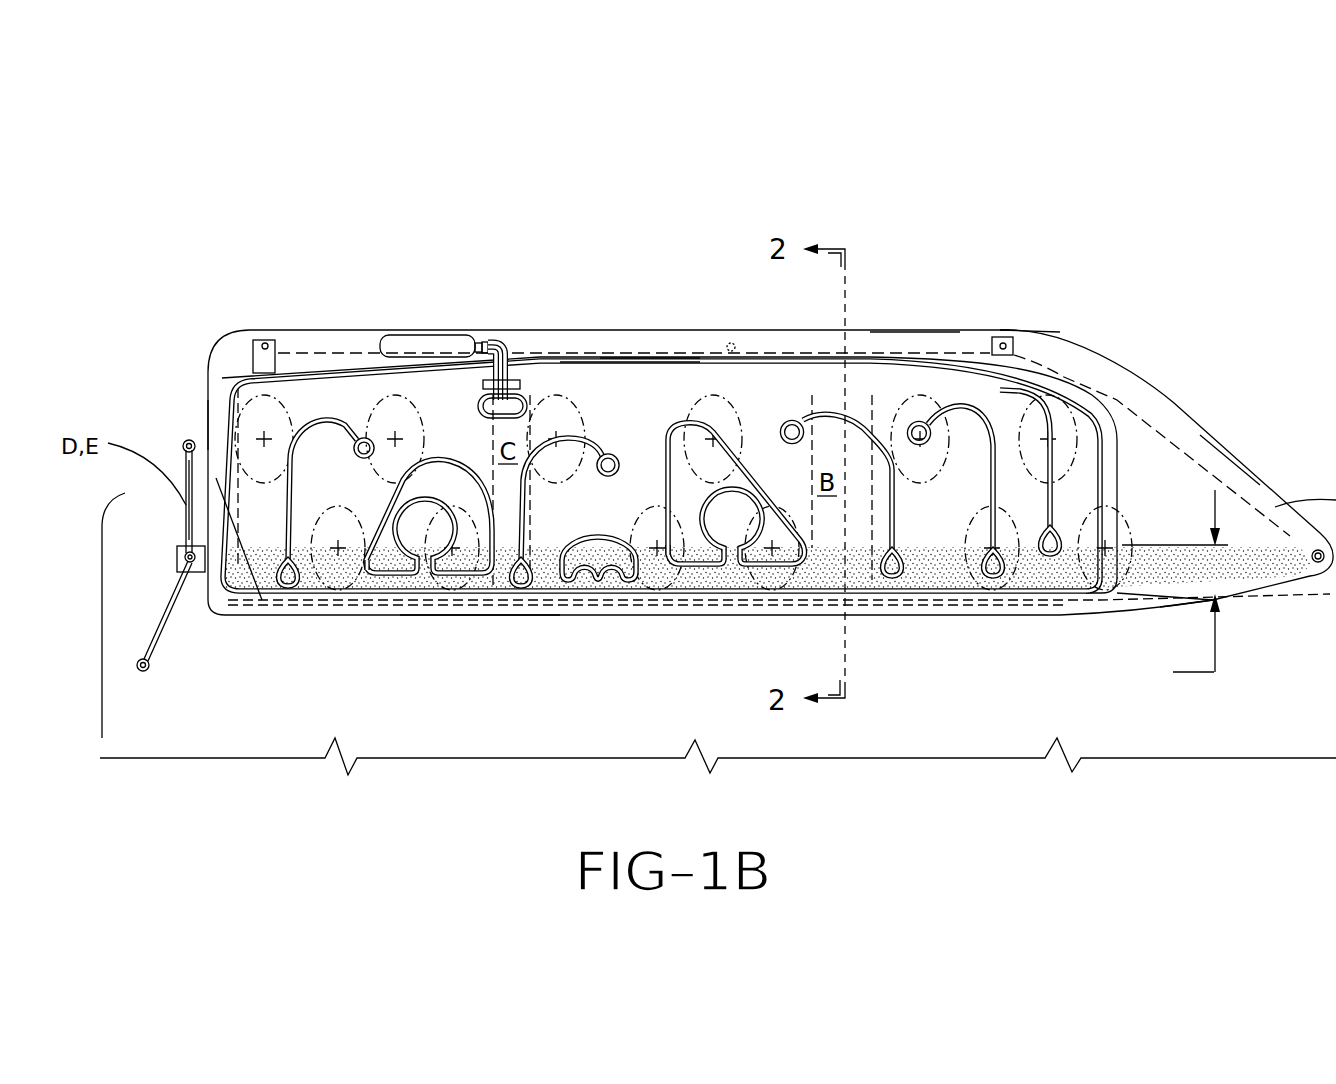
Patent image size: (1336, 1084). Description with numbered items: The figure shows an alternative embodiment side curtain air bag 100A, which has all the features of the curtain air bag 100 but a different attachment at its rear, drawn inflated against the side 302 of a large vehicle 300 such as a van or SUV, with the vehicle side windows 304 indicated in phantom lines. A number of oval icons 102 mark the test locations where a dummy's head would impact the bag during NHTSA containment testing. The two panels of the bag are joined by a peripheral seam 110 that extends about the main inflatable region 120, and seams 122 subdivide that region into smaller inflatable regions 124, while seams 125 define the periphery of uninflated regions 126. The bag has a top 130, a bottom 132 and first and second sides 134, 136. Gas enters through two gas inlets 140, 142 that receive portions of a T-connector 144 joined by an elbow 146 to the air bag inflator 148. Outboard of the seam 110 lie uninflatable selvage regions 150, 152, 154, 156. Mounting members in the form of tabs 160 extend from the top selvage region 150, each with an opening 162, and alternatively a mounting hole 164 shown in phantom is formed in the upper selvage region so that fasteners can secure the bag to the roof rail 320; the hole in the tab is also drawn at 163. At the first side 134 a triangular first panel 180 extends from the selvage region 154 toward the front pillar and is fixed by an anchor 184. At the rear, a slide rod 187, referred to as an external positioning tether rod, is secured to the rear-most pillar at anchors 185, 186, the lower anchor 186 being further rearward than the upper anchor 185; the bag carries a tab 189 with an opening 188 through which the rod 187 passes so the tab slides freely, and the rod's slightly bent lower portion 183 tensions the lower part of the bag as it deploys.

The curtain air bag 100 is at (1091, 444).
The side curtain air bag 100A is at (1042, 262).
The oval icons 102 is at (955, 343).
The peripheral seam 110 is at (868, 356).
The main inflatable region 120 is at (868, 436).
The seam 122 is at (800, 418).
The smaller inflatable regions 124 is at (303, 487).
The seam 125 is at (736, 500).
The uninflated regions 126 is at (388, 592).
The top 130 is at (580, 358).
The bottom 132 is at (472, 612).
The first side 134 is at (1120, 480).
The second side 136 is at (108, 515).
The gas inlet 140 is at (478, 394).
The gas inlet 142 is at (515, 340).
The T-connector 144 is at (518, 380).
The elbow 146 is at (500, 340).
The air bag inflator 148 is at (392, 334).
The top selvage region 150 is at (630, 358).
The selvage region 152 is at (1234, 585).
The selvage region 154 is at (1157, 515).
The selvage region 156 is at (262, 600).
The mounting members 160 is at (250, 337).
The opening 162 is at (1165, 574).
The bracket hole 163 is at (278, 338).
The mounting hole 164 is at (730, 342).
The first panel 180 is at (1155, 517).
The lower portion 183 is at (165, 632).
The anchor 184 is at (1313, 580).
The anchor 185 is at (177, 472).
The anchor 186 is at (143, 672).
The slide rod 187 is at (185, 512).
The opening 188 is at (183, 565).
The tab 189 is at (178, 572).
The vehicle 300 is at (1252, 245).
The side 302 is at (990, 330).
The side windows 304 is at (338, 332).
The roof rail 320 is at (905, 340).